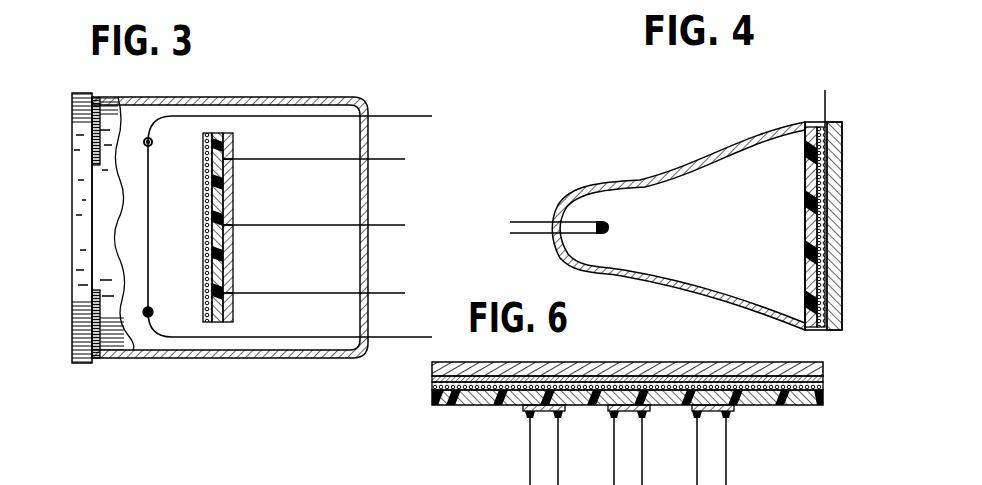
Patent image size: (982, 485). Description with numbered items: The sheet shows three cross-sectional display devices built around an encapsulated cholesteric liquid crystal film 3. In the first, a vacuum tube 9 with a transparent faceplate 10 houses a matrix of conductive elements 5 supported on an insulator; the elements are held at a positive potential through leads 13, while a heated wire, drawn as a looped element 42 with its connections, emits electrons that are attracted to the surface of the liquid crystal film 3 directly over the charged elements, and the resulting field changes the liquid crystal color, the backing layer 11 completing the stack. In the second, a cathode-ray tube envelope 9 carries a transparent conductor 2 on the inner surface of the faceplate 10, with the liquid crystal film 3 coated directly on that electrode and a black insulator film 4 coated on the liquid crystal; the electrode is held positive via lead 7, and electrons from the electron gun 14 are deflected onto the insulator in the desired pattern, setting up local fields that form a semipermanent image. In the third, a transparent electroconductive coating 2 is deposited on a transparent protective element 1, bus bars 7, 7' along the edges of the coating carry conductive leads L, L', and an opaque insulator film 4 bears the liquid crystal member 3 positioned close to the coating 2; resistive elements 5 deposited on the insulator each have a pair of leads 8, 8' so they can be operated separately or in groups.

In FIG. 6, the transparent protective element 1 is at (767, 376).
In FIG. 4, the transparent electroconductive coating 2 is at (842, 250).
In FIG. 6, the transparent electroconductive coating 2 is at (823, 367).
In FIG. 3, the encapsulated cholesteric liquid crystal film 3 is at (203, 140).
In FIG. 4, the encapsulated cholesteric liquid crystal film 3 is at (813, 318).
In FIG. 6, the encapsulated cholesteric liquid crystal film 3 is at (690, 382).
In FIG. 3, the black insulator film 4 is at (224, 264).
In FIG. 4, the black insulator film 4 is at (808, 128).
In FIG. 6, the black insulator film 4 is at (800, 405).
In FIG. 3, the conductive elements 5 is at (233, 162).
In FIG. 6, the conductive elements 5 is at (523, 410).
In FIG. 4, the lead 7 is at (807, 102).
In FIG. 6, the lead 7 is at (652, 402).
In FIG. 6, the bus bar 7' is at (421, 399).
In FIG. 6, the lead 8 is at (600, 448).
In FIG. 6, the lead 8' is at (642, 448).
In FIG. 3, the vacuum tube 9 is at (214, 358).
In FIG. 4, the vacuum tube 9 is at (683, 284).
In FIG. 3, the faceplate 10 is at (72, 212).
In FIG. 4, the faceplate 10 is at (842, 183).
In FIG. 3, the backing layer 11 is at (230, 290).
In FIG. 3, the leads 13 is at (297, 159).
In FIG. 4, the electron gun 14 is at (533, 235).
In FIG. 3, the heater loop 42 is at (148, 190).
In FIG. 6, the conductive lead L is at (840, 382).
In FIG. 6, the conductive lead L' is at (412, 374).